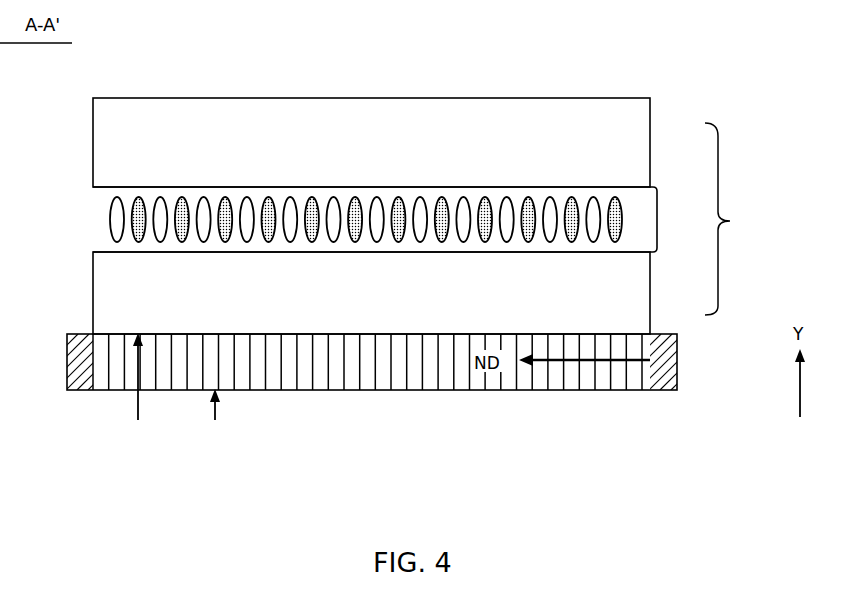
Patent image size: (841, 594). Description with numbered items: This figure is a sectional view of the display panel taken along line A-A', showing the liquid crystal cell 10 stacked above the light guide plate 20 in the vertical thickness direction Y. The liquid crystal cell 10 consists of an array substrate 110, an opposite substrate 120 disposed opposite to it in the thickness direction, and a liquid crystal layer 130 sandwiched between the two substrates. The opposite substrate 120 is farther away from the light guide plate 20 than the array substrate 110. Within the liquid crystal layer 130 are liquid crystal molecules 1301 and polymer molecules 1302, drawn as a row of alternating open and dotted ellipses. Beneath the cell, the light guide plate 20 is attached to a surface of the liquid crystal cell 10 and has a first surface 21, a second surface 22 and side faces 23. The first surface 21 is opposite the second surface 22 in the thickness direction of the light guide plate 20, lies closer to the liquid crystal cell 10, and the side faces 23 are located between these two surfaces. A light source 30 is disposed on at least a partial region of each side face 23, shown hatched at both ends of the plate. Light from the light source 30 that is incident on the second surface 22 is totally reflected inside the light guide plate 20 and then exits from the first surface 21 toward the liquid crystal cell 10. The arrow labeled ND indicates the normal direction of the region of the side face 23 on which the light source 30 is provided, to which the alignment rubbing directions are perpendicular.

The liquid crystal cell 10 is at (733, 219).
The array substrate 110 is at (638, 312).
The opposite substrate 120 is at (642, 127).
The liquid crystal layer 130 is at (657, 189).
The liquid crystal molecules 1301 is at (110, 223).
The polymer molecules 1302 is at (137, 201).
The light guide plate 20 is at (603, 383).
The first surface 21 is at (139, 390).
The second surface 22 is at (216, 418).
The side faces 23 is at (93, 362).
The light source 30 is at (73, 350).